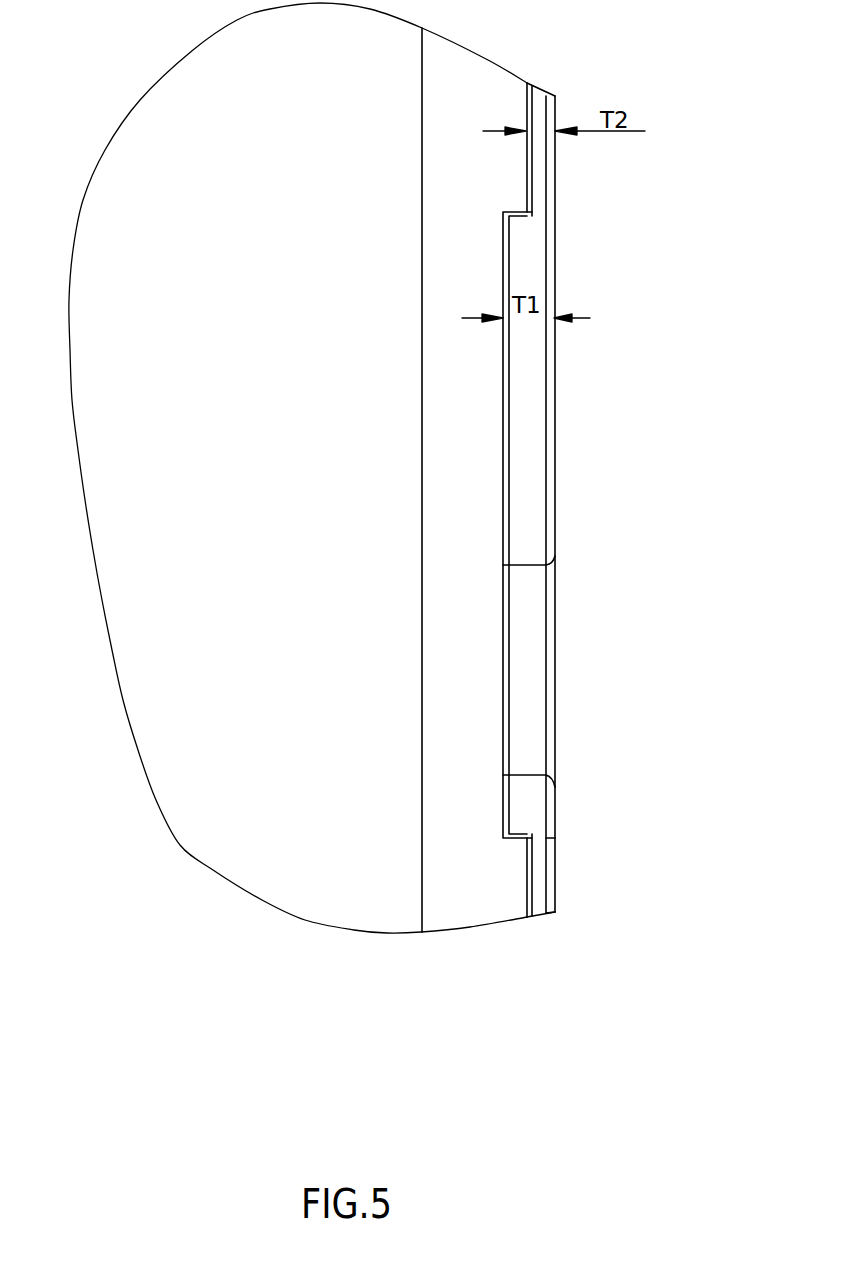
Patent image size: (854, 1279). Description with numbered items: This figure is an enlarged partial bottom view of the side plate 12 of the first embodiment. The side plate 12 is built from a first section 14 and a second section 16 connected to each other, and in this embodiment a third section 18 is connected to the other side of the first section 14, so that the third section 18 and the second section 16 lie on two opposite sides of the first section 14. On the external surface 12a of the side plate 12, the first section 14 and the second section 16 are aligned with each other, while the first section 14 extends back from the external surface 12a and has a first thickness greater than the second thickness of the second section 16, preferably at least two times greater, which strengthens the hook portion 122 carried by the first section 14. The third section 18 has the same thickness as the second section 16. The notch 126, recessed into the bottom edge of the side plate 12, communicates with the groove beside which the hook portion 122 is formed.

The side plate 12 is at (550, 153).
The external surface 12a is at (555, 177).
The third section 18 is at (542, 193).
The first section 14 is at (535, 262).
The hook portion 122 is at (535, 380).
The notch 126 is at (529, 660).
The second section 16 is at (538, 873).